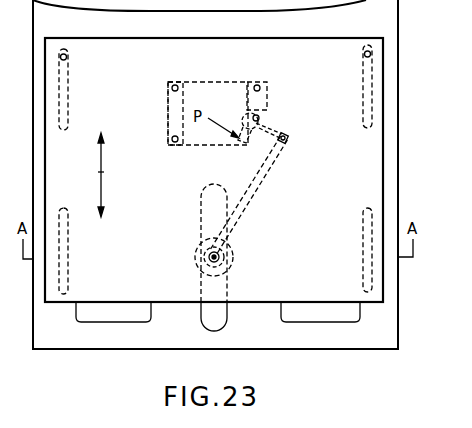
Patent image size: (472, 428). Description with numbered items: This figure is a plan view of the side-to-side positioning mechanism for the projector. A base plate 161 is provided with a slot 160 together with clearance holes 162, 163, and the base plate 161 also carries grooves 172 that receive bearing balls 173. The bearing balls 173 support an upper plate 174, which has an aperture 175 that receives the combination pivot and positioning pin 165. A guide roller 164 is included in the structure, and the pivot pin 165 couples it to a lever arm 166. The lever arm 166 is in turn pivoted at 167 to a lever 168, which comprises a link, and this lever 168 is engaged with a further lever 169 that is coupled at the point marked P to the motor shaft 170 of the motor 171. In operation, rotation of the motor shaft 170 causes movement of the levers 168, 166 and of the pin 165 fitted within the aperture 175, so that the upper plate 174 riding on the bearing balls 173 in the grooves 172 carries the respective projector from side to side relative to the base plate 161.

The slot 160 is at (228, 318).
The base plate 161 is at (368, 350).
The clearance hole 162 is at (94, 319).
The clearance hole 163 is at (300, 319).
The guide roller 164 is at (232, 262).
The combination pivot and positioning pin 165 is at (219, 254).
The lever arm 166 is at (250, 194).
The pivot 167 is at (285, 135).
The lever 168 is at (268, 118).
The lever 169 is at (238, 144).
The motor shaft 170 is at (241, 134).
The motor 171 is at (238, 85).
The grooves 172 is at (61, 98).
The bearing balls 173 is at (66, 64).
The upper plate 174 is at (165, 48).
The aperture 175 is at (209, 256).